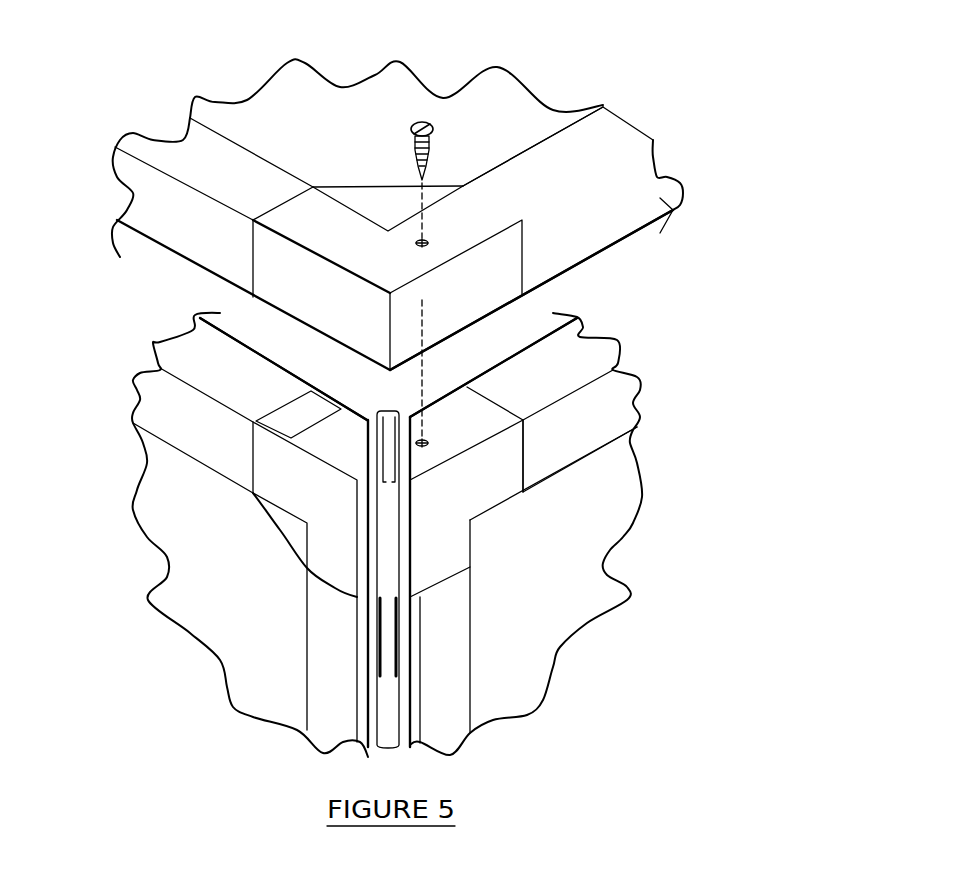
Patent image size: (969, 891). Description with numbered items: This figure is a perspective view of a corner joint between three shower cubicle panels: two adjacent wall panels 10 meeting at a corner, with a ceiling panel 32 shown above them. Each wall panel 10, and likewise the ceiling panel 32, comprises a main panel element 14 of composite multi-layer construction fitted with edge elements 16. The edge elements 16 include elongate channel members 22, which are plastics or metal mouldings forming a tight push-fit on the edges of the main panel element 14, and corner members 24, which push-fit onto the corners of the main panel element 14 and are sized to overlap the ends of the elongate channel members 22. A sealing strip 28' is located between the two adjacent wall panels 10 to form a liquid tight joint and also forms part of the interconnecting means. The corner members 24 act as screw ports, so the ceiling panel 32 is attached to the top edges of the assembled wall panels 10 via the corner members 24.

The wall panel 10 is at (190, 635).
The main panel element 14 is at (580, 607).
The edge element 16 is at (340, 400).
The elongate channel member 22 is at (673, 210).
The corner member 24 is at (553, 340).
The sealing strip 28' is at (216, 482).
The ceiling panel 32 is at (215, 107).